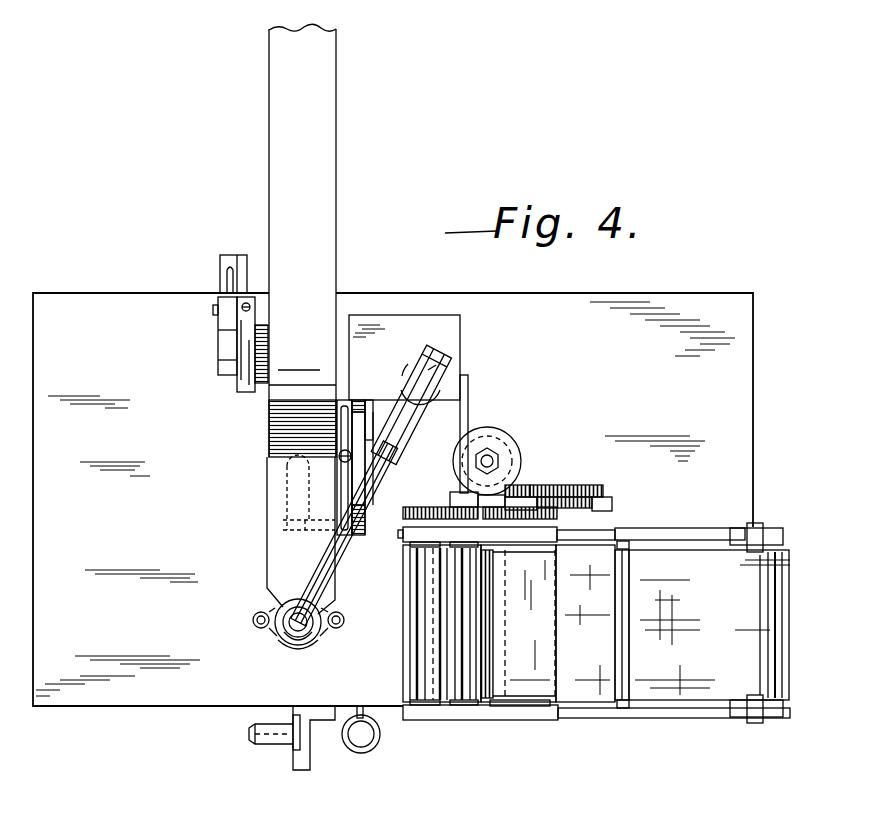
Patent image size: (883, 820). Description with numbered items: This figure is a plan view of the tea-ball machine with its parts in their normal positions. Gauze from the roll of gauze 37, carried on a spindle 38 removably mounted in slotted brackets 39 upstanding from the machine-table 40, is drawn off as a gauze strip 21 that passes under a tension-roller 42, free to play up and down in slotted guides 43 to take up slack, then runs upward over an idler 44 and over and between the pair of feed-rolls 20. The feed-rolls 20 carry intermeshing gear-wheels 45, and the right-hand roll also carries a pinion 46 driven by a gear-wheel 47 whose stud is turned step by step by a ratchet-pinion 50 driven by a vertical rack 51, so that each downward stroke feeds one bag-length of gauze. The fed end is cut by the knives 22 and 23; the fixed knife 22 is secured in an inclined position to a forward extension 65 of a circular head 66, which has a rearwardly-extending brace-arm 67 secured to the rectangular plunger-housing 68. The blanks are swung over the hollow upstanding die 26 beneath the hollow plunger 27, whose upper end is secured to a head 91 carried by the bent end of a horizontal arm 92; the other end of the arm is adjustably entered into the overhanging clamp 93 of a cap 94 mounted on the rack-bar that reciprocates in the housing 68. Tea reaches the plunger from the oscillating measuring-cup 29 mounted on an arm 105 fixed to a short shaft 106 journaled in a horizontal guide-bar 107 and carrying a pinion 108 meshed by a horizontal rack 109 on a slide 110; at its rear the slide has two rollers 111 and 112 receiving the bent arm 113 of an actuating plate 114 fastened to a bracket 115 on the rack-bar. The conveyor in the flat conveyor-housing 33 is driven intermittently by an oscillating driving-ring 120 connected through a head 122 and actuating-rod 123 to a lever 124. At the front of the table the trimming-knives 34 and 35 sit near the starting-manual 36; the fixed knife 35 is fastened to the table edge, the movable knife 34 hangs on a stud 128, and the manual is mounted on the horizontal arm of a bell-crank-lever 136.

The feed-rolls 20 is at (404, 660).
The gauze strip 21 is at (618, 712).
The fixed knife 22 is at (460, 720).
The knife 23 is at (508, 650).
The hollow upstanding die 26 is at (282, 644).
The hollow plunger 27 is at (303, 648).
The oscillating measuring-cup 29 is at (285, 471).
The conveyor-housing 33 is at (330, 265).
The movable trimming-knife 34 is at (292, 750).
The fixed trimming-knife 35 is at (300, 772).
The starting-manual 36 is at (378, 750).
The roll of gauze 37 is at (778, 722).
The spindle 38 is at (750, 722).
The slotted brackets 39 is at (705, 535).
The machine-table 40 is at (740, 378).
The tension-roller 42 is at (632, 578).
The slotted guides 43 is at (626, 545).
The idler 44 is at (602, 712).
The intermeshing gear-wheels 45 is at (504, 500).
The pinion 46 is at (522, 486).
The gear-wheel 47 is at (566, 486).
The ratchet-pinion 50 is at (558, 485).
The vertical rack 51 is at (614, 504).
The forward extension 65 is at (452, 487).
The circular head 66 is at (505, 430).
The brace-arm 67 is at (470, 402).
The plunger-housing 68 is at (398, 325).
The head 91 is at (275, 625).
The horizontal arm 92 is at (340, 545).
The overhanging clamp 93 is at (440, 366).
The cap 94 is at (427, 392).
The arm 105 is at (290, 508).
The short shaft 106 is at (314, 538).
The horizontal guide-bar 107 is at (341, 430).
The pinion 108 is at (358, 540).
The horizontal rack 109 is at (356, 524).
The slide 110 is at (338, 476).
The roller 111 is at (355, 430).
The roller 112 is at (268, 432).
The bent arm 113 is at (375, 410).
The actuating plate 114 is at (376, 478).
The bracket 115 is at (394, 418).
The oscillating driving-ring 120 is at (243, 390).
The head 122 is at (226, 312).
The actuating-rod 123 is at (224, 283).
The lever 124 is at (243, 280).
The stud 128 is at (250, 737).
The bell-crank-lever 136 is at (350, 716).